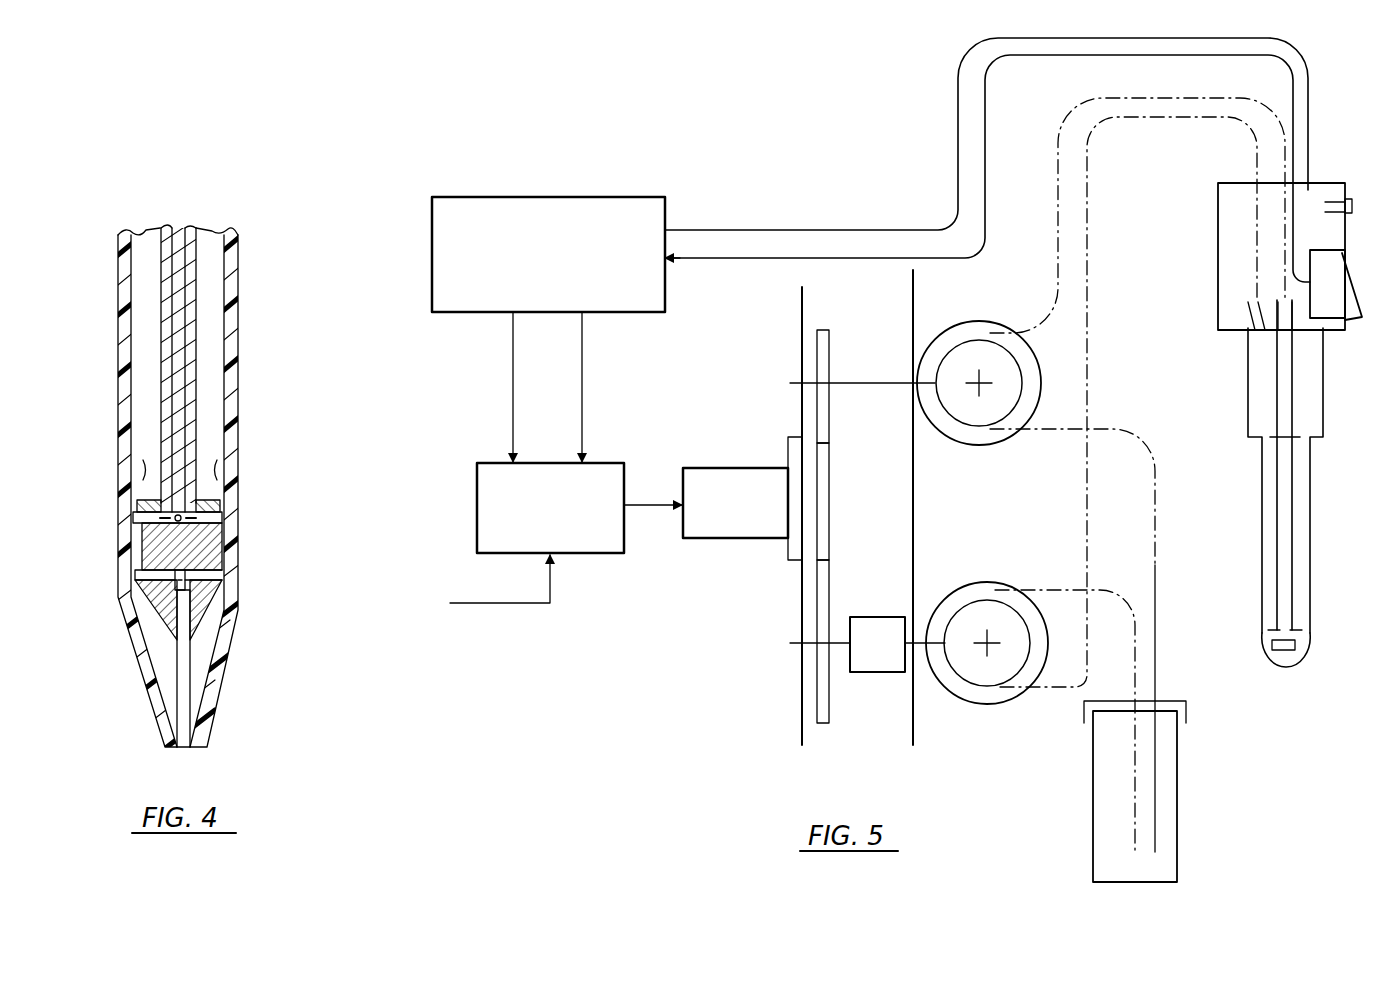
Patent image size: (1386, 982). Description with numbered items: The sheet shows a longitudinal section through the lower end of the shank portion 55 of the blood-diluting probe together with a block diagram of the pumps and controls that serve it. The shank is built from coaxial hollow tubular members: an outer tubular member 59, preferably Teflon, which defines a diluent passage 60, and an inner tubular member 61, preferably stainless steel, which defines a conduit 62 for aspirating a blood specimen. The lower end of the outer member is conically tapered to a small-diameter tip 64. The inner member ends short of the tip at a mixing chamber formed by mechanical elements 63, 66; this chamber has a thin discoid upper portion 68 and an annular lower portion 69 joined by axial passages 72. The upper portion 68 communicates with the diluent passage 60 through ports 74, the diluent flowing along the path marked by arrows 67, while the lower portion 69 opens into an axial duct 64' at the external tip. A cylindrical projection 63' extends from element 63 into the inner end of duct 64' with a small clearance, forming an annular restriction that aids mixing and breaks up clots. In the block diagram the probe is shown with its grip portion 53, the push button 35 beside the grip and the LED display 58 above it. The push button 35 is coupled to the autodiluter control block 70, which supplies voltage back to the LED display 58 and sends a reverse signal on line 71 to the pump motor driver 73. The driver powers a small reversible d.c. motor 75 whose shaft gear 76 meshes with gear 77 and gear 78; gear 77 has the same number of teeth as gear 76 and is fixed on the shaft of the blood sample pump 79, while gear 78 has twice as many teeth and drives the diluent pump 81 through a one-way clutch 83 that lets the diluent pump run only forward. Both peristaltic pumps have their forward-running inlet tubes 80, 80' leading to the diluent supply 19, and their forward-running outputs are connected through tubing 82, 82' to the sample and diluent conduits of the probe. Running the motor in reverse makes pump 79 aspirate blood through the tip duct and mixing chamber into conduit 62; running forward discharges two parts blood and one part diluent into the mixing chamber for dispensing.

In FIG. 5, the diluent supply 19 is at (1178, 770).
In FIG. 5, the push button 35 is at (1358, 270).
In FIG. 5, the grip portion 53 is at (1312, 397).
In FIG. 4, the shank portion 55 is at (127, 376).
In FIG. 5, the shank portion 55 is at (1305, 496).
In FIG. 5, the LED display 58 is at (1352, 202).
In FIG. 4, the outer tubular member 59 is at (240, 293).
In FIG. 4, the diluent passage 60 is at (215, 338).
In FIG. 5, the diluent passage 60 is at (1300, 536).
In FIG. 4, the inner tubular member 61 is at (190, 368).
In FIG. 4, the conduit 62 is at (178, 402).
In FIG. 5, the conduit 62 is at (1284, 595).
In FIG. 4, the mechanical element 63 is at (228, 546).
In FIG. 4, the cylindrical projection 63' is at (244, 588).
In FIG. 4, the tip 64 is at (121, 710).
In FIG. 4, the axial duct 64' is at (238, 668).
In FIG. 4, the mechanical element 66 is at (200, 537).
In FIG. 4, the arrows 67 is at (143, 463).
In FIG. 4, the upper portion of mixing chamber 68 is at (137, 520).
In FIG. 4, the lower portion of mixing chamber 69 is at (143, 625).
In FIG. 5, the autodiluter control block 70 is at (645, 195).
In FIG. 5, the line 71 is at (584, 370).
In FIG. 4, the axial passages 72 is at (140, 557).
In FIG. 5, the pump motor driver 73 is at (600, 462).
In FIG. 4, the ports 74 is at (137, 518).
In FIG. 5, the reversible motor 75 is at (730, 467).
In FIG. 5, the gear 76 is at (830, 465).
In FIG. 5, the gear 77 is at (830, 350).
In FIG. 5, the gear 78 is at (830, 590).
In FIG. 5, the blood sample pump 79 is at (965, 328).
In FIG. 5, the tube 80 is at (1099, 640).
In FIG. 5, the tube 80' is at (1106, 721).
In FIG. 5, the diluent pump 81 is at (996, 585).
In FIG. 5, the tubing 82 is at (1141, 215).
In FIG. 5, the tubing 82' is at (1132, 402).
In FIG. 5, the one-way clutch 83 is at (890, 673).